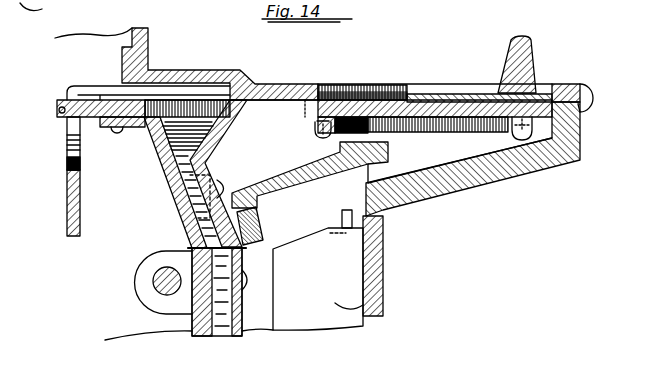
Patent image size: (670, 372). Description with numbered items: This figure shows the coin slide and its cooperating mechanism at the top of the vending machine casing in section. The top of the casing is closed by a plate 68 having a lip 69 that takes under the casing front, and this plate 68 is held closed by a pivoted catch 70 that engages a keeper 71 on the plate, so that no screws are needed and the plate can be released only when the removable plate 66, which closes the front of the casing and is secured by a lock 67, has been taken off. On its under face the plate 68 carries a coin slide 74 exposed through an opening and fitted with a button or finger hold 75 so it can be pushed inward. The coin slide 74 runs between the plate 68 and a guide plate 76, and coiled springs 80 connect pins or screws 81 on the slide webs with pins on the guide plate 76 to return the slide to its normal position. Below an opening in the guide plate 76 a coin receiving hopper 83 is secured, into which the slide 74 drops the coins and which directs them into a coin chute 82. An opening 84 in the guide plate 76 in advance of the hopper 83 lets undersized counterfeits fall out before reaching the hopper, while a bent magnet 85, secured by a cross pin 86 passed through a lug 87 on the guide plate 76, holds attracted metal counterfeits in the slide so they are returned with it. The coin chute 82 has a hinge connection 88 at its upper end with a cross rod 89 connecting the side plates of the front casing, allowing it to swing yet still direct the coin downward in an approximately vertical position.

The removable plate 66 is at (383, 282).
The lock 67 is at (329, 265).
The plate 68 is at (286, 87).
The lip 69 is at (122, 55).
The pivoted catch 70 is at (297, 181).
The keeper 71 is at (460, 160).
The coin slide 74 is at (463, 93).
The button or finger hold 75 is at (530, 64).
The guide plate 76 is at (417, 99).
The coiled springs 80 is at (478, 128).
The pins or screws 81 is at (313, 127).
The coin chute 82 is at (195, 336).
The coin receiving hopper 83 is at (183, 174).
The opening 84 is at (281, 117).
The bent magnet 85 is at (67, 168).
The cross pin 86 is at (59, 110).
The lug 87 is at (92, 121).
The hinge connection 88 is at (143, 296).
The cross rod 89 is at (151, 276).